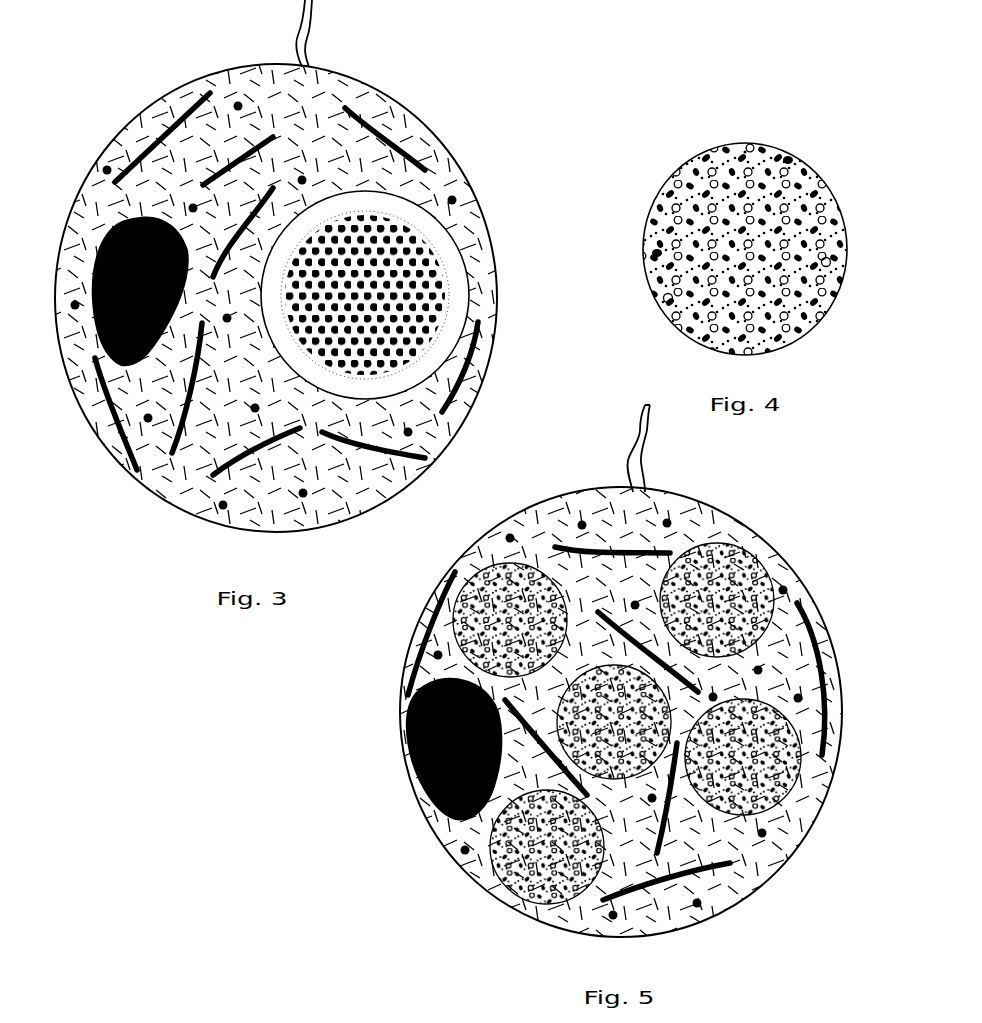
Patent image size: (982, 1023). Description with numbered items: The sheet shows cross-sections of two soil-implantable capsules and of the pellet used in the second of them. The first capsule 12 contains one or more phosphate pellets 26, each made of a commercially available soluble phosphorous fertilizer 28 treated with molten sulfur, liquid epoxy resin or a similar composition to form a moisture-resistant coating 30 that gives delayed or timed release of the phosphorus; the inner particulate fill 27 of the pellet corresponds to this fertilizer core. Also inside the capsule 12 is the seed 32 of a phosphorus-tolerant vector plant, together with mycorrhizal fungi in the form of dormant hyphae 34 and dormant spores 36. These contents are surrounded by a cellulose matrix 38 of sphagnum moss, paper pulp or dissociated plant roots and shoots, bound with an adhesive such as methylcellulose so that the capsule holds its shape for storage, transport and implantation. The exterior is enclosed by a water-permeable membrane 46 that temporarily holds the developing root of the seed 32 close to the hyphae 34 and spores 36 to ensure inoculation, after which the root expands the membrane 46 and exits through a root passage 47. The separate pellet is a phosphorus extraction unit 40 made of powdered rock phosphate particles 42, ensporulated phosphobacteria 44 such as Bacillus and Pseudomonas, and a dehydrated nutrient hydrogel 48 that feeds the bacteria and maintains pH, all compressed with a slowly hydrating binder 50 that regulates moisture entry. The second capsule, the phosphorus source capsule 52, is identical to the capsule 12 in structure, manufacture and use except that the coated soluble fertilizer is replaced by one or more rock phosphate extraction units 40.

In FIG. 3, the capsule 12 is at (388, 49).
In FIG. 3, the phosphate pellet 26 is at (466, 228).
In FIG. 3, the particulate core 27 is at (425, 285).
In FIG. 3, the soluble phosphorous fertilizer 28 is at (430, 333).
In FIG. 3, the coating 30 is at (466, 321).
In FIG. 3, the seed 32 is at (95, 290).
In FIG. 5, the seed 32 is at (412, 746).
In FIG. 3, the dormant hyphae 34 is at (445, 408).
In FIG. 5, the dormant hyphae 34 is at (592, 553).
In FIG. 3, the dormant spores 36 is at (238, 110).
In FIG. 5, the dormant spores 36 is at (582, 520).
In FIG. 3, the cellulose matrix 38 is at (432, 145).
In FIG. 5, the cellulose matrix 38 is at (665, 928).
In FIG. 4, the phosphorus extraction unit 40 is at (855, 150).
In FIG. 5, the phosphorus extraction unit 40 is at (472, 580).
In FIG. 4, the rock phosphate particles 42 is at (832, 198).
In FIG. 4, the phosphobacteria 44 is at (788, 160).
In FIG. 3, the membrane 46 is at (381, 90).
In FIG. 5, the membrane 46 is at (745, 905).
In FIG. 3, the root passage 47 is at (307, 39).
In FIG. 5, the root passage 47 is at (638, 449).
In FIG. 4, the nutrient hydrogel 48 is at (830, 263).
In FIG. 4, the binder 50 is at (745, 145).
In FIG. 5, the phosphorus source capsule 52 is at (776, 532).